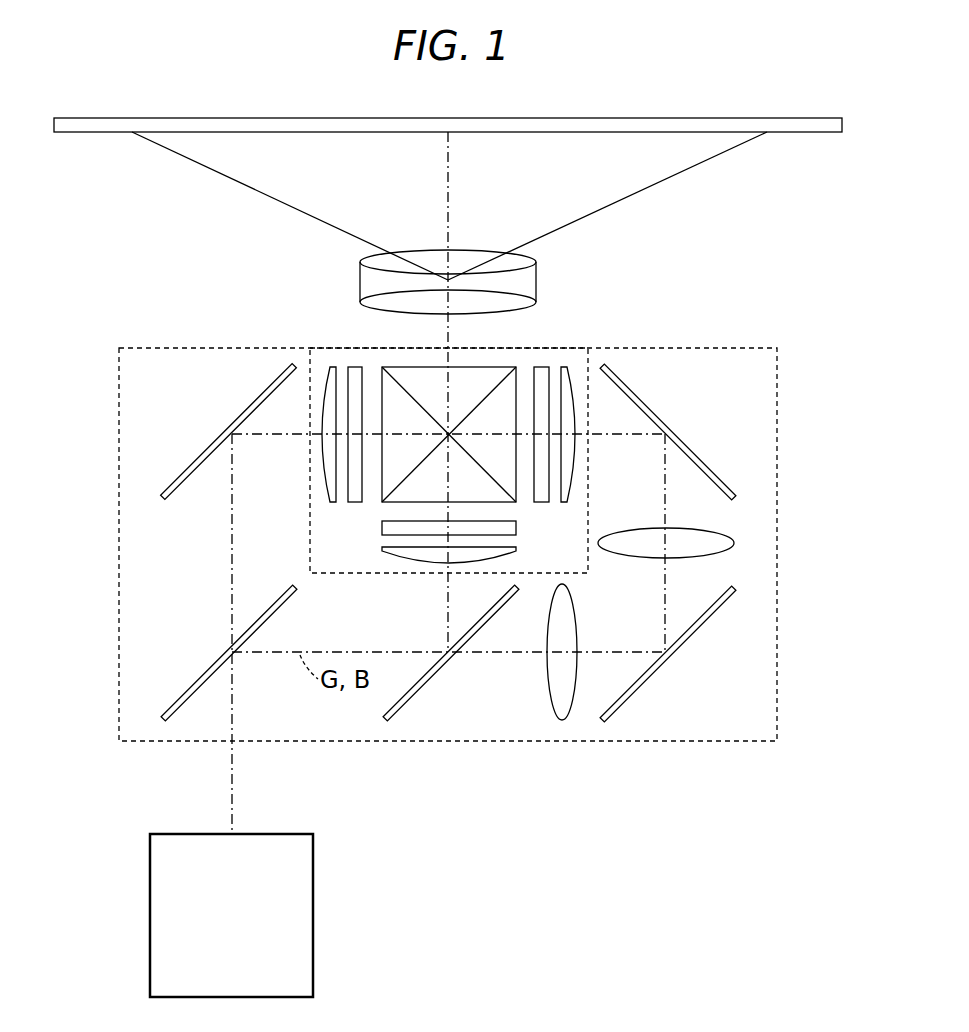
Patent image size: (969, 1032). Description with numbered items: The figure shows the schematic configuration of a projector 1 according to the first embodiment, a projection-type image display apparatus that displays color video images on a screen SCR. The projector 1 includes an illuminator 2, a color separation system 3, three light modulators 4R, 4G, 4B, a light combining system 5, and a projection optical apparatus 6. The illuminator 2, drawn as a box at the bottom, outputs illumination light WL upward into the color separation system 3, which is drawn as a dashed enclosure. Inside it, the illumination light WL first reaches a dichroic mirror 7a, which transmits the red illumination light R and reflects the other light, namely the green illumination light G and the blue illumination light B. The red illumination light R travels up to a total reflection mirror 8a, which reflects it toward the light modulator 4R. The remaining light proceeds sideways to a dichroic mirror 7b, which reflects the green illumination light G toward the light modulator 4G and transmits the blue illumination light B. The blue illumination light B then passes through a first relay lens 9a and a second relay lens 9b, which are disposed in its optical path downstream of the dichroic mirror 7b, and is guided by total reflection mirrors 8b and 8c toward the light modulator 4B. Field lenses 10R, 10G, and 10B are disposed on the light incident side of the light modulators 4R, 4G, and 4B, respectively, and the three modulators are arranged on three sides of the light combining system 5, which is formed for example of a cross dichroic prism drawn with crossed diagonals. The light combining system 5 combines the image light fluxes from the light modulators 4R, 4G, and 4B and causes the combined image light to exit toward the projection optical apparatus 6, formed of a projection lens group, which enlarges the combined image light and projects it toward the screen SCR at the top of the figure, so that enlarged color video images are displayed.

The projector 1 is at (784, 328).
The illuminator 2 is at (313, 855).
The color separation system 3 is at (119, 490).
The light modulator 4R is at (355, 367).
The light modulator 4G is at (388, 529).
The light modulator 4B is at (542, 367).
The light combining system 5 is at (461, 373).
The projection optical apparatus 6 is at (429, 258).
The dichroic mirror 7a is at (194, 684).
The dichroic mirror 7b is at (426, 685).
The total reflection mirror 8a is at (207, 450).
The total reflection mirror 8b is at (690, 640).
The total reflection mirror 8c is at (695, 450).
The first relay lens 9a is at (548, 672).
The second relay lens 9b is at (722, 534).
The field lens 10R is at (330, 367).
The field lens 10G is at (388, 553).
The field lens 10B is at (566, 367).
The screen SCR is at (810, 133).
The red illumination light R is at (232, 565).
The green illumination light G is at (448, 609).
The blue illumination light B is at (665, 600).
The illumination light WL is at (242, 676).